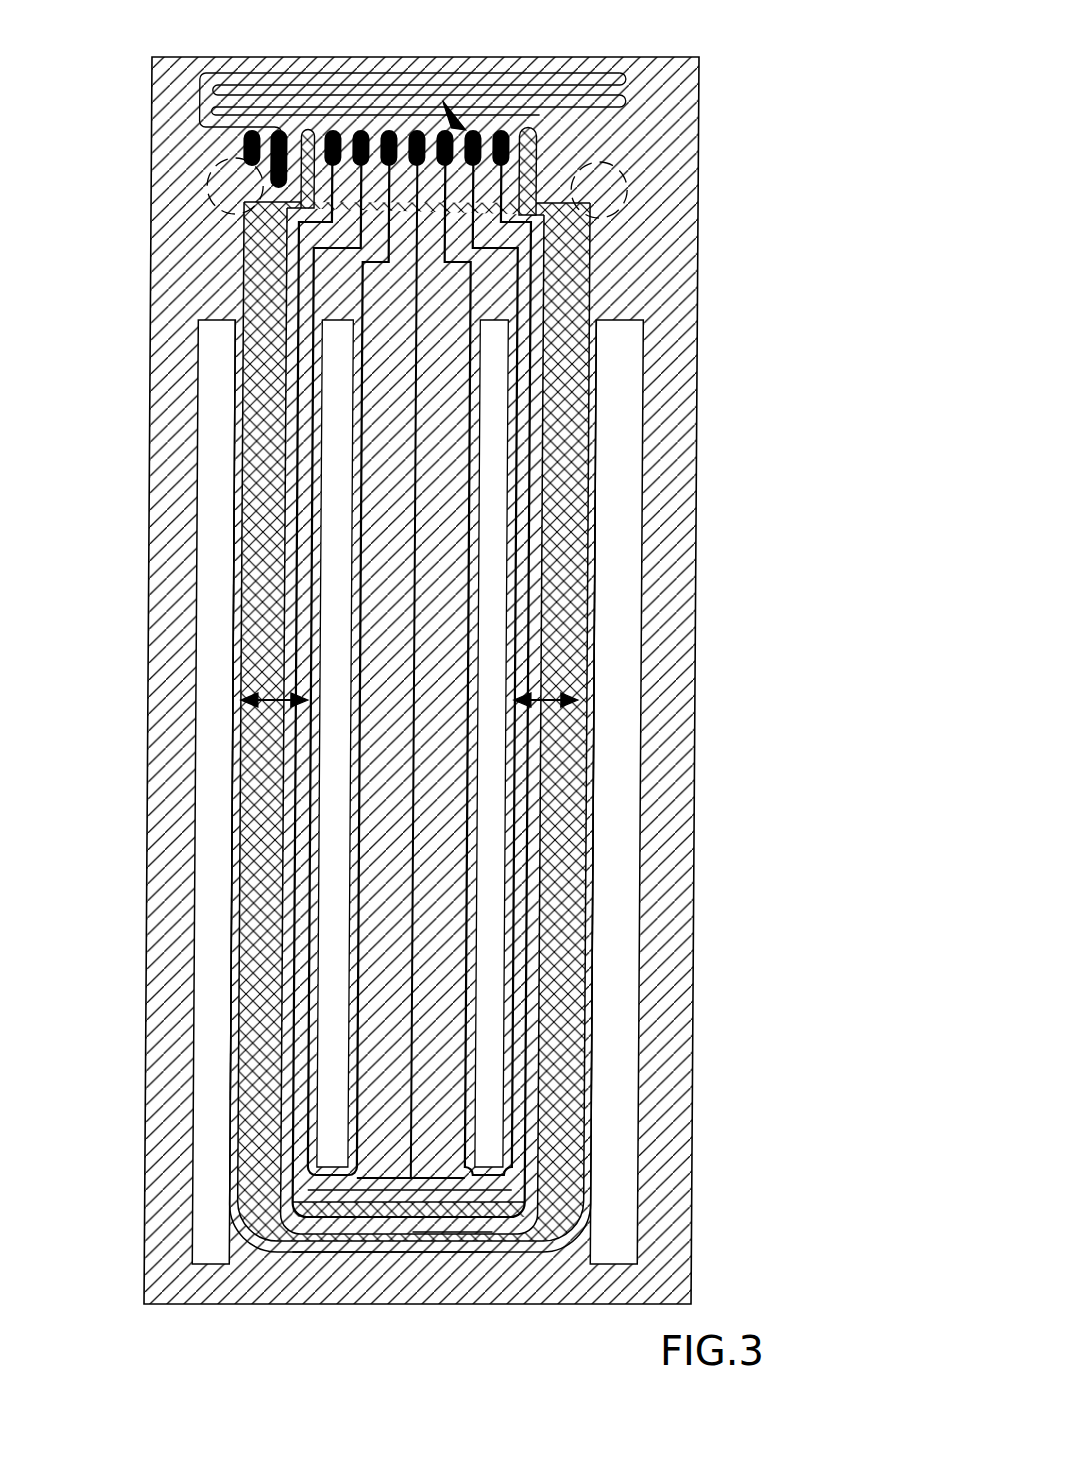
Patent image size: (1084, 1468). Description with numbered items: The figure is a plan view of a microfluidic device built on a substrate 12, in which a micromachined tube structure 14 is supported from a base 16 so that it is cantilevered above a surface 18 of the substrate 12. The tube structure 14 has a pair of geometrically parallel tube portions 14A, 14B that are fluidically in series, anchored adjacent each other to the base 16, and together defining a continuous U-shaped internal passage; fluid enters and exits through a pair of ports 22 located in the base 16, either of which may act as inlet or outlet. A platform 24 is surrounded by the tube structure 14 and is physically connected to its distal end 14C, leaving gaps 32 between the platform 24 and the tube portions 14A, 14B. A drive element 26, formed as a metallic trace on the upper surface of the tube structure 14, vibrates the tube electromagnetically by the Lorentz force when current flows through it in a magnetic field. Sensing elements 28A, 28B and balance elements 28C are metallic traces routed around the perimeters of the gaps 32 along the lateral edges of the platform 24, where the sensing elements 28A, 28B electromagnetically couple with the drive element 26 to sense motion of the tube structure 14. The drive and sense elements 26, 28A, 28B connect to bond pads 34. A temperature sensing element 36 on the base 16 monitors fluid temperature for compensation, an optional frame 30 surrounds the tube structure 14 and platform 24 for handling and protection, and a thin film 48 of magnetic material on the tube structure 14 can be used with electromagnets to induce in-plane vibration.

The substrate 12 is at (157, 1078).
The tube structure 14 is at (597, 729).
The tube portion 14A is at (592, 860).
The tube portion 14B is at (240, 916).
The distal end 14C is at (360, 1254).
The base 16 is at (172, 127).
The surface 18 is at (212, 433).
The ports 22 is at (205, 182).
The platform 24 is at (352, 825).
The drive element 26 is at (258, 572).
The sensing element 28A is at (536, 642).
The sensing element 28B is at (300, 608).
The balance element 28C is at (310, 445).
The frame 30 is at (672, 405).
The gaps 32 is at (340, 692).
The bond pads 34 is at (452, 112).
The temperature sensing element 36 is at (622, 79).
The thin film of magnetic material 48 is at (448, 1238).